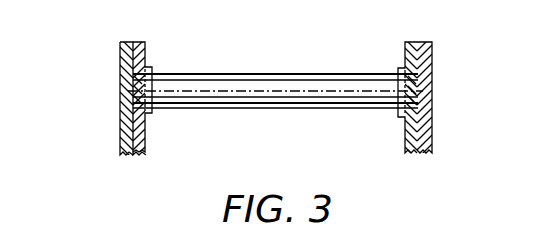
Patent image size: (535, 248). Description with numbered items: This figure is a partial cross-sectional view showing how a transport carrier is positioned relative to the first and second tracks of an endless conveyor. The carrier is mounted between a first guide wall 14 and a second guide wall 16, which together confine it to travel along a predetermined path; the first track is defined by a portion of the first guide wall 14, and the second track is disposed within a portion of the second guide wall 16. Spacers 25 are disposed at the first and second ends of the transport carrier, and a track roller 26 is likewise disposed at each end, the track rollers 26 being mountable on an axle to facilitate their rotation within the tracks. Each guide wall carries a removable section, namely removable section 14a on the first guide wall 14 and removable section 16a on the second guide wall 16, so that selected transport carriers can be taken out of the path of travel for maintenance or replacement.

The first guide wall 14 is at (123, 42).
The removable section of first guide wall 14a is at (137, 42).
The second guide wall 16 is at (425, 42).
The removable section of second guide wall 16a is at (415, 42).
The spacer 25 is at (148, 113).
The track roller 26 is at (128, 93).